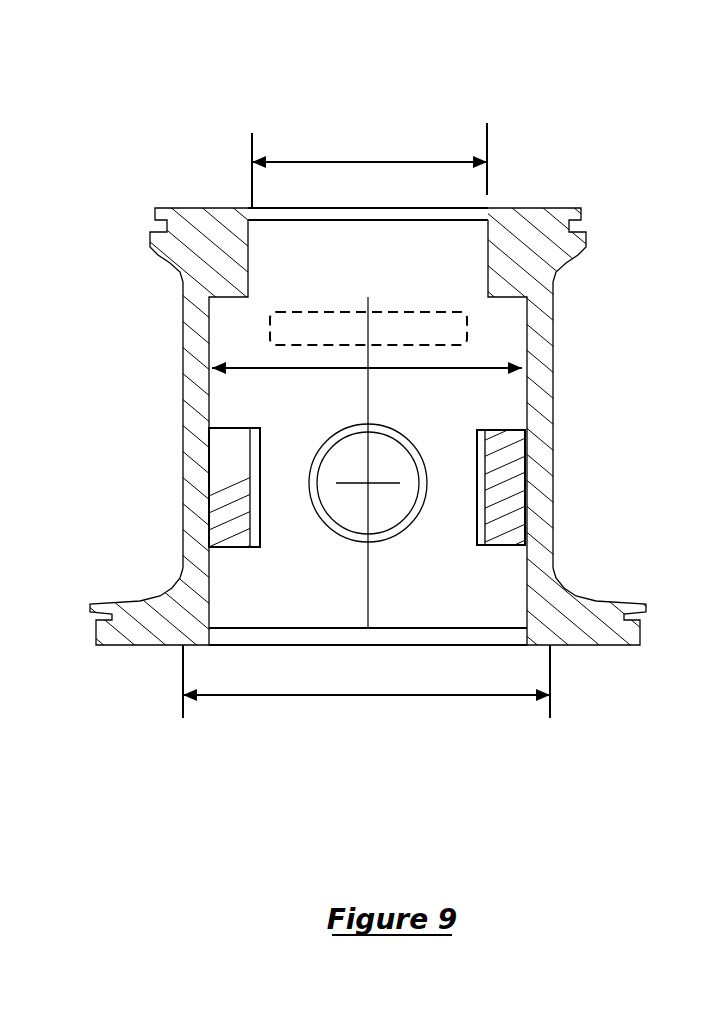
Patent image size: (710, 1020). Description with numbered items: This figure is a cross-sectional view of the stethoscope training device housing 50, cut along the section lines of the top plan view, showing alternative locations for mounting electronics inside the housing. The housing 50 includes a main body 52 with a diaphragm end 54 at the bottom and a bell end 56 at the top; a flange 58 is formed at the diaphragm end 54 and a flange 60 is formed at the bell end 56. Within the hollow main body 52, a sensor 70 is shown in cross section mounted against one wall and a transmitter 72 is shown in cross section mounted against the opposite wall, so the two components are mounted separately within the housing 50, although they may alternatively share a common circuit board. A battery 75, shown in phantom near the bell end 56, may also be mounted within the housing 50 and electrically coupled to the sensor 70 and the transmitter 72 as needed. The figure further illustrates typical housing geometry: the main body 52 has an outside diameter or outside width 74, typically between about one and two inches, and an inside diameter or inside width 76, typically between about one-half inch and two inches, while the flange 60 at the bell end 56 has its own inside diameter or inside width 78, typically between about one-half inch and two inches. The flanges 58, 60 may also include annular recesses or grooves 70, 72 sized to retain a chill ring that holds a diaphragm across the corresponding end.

The stethoscope training device housing 50 is at (632, 142).
The main body 52 is at (184, 367).
The diaphragm end 54 is at (449, 748).
The bell end 56 is at (431, 138).
The flange 58 is at (112, 643).
The flange 60 is at (155, 212).
The sensor 70 is at (260, 500).
The transmitter 72 is at (480, 505).
The outside width 74 is at (298, 695).
The battery 75 is at (398, 308).
The inside width 76 is at (343, 368).
The inside width 78 is at (365, 162).